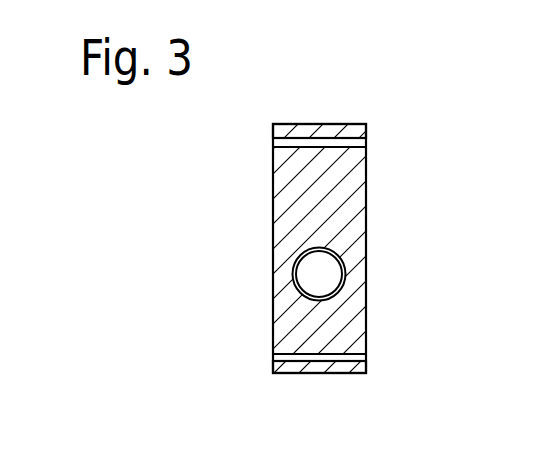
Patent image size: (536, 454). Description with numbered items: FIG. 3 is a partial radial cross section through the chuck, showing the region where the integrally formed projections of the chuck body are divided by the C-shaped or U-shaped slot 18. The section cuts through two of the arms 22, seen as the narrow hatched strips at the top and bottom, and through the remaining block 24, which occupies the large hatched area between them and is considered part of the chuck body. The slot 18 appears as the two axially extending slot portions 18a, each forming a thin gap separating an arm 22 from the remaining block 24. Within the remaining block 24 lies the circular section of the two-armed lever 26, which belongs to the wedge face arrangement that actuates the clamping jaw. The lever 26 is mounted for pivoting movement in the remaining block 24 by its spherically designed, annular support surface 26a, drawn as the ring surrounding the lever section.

The slot 18 is at (378, 357).
The axially extending slot portion 18a is at (352, 143).
The arm 22 is at (325, 130).
The remaining block 24 is at (352, 178).
The two-armed lever 26 is at (312, 276).
The spherical annular support surface 26a is at (345, 261).